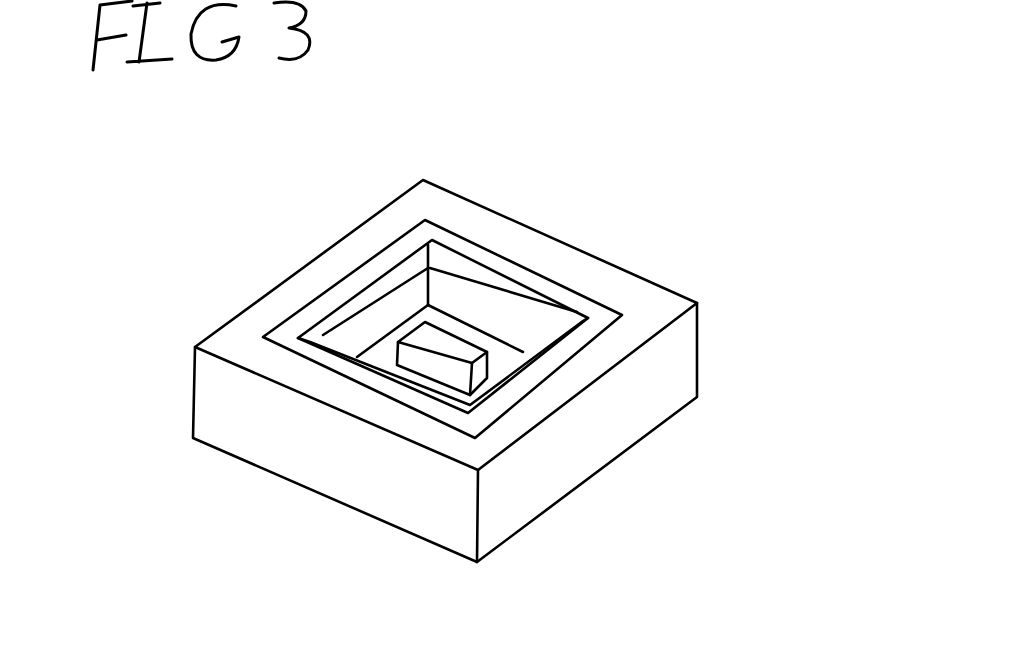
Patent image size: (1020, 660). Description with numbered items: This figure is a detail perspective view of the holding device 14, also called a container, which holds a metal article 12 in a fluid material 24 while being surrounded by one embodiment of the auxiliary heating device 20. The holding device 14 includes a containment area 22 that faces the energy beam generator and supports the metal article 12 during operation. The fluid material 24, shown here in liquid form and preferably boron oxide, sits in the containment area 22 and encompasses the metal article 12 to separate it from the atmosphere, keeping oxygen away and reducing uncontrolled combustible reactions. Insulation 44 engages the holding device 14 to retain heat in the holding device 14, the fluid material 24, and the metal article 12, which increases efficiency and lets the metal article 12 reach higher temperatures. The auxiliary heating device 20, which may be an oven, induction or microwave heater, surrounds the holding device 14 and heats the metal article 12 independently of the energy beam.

The insulation 44 is at (213, 327).
The auxiliary heating device 20 is at (302, 357).
The holding device 14 is at (577, 310).
The containment area 22 is at (449, 268).
The fluid material 24 is at (497, 297).
The metal article 12 is at (510, 377).